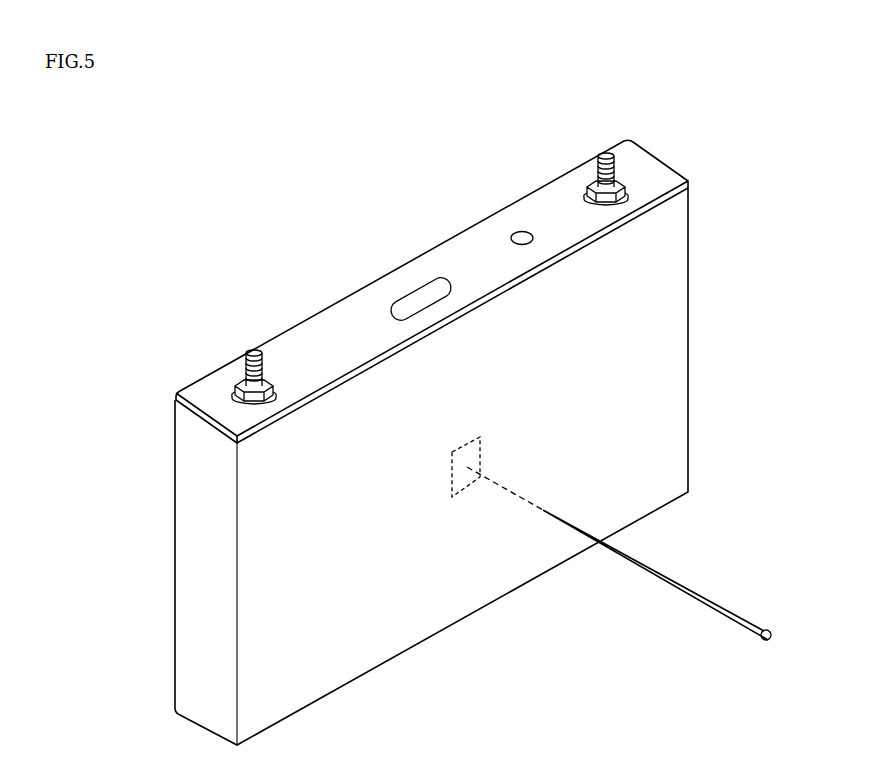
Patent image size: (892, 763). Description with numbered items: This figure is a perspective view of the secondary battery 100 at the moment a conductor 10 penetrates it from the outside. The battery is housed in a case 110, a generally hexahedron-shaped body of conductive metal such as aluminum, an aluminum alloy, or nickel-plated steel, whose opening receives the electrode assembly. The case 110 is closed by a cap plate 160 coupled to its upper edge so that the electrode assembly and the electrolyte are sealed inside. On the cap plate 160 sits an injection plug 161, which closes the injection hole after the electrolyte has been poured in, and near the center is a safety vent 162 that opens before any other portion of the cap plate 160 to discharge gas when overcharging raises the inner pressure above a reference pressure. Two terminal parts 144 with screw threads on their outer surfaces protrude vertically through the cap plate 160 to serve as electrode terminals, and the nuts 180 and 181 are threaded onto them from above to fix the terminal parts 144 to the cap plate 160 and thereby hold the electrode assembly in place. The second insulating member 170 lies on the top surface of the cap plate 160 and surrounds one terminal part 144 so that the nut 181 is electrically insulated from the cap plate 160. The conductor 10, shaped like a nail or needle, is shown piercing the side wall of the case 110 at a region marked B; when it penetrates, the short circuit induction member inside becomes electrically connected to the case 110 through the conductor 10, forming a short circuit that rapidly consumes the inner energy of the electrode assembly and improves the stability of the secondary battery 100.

The secondary battery 100 is at (147, 168).
The case 110 is at (323, 682).
The cap plate 160 is at (342, 307).
The injection plug 161 is at (520, 233).
The safety vent 162 is at (408, 293).
The second insulating member 170 is at (234, 392).
The nut 180 is at (594, 184).
The nut 181 is at (243, 383).
The terminal part 144 is at (256, 350).
The conductor 10 is at (726, 607).
The penetration region B is at (480, 437).